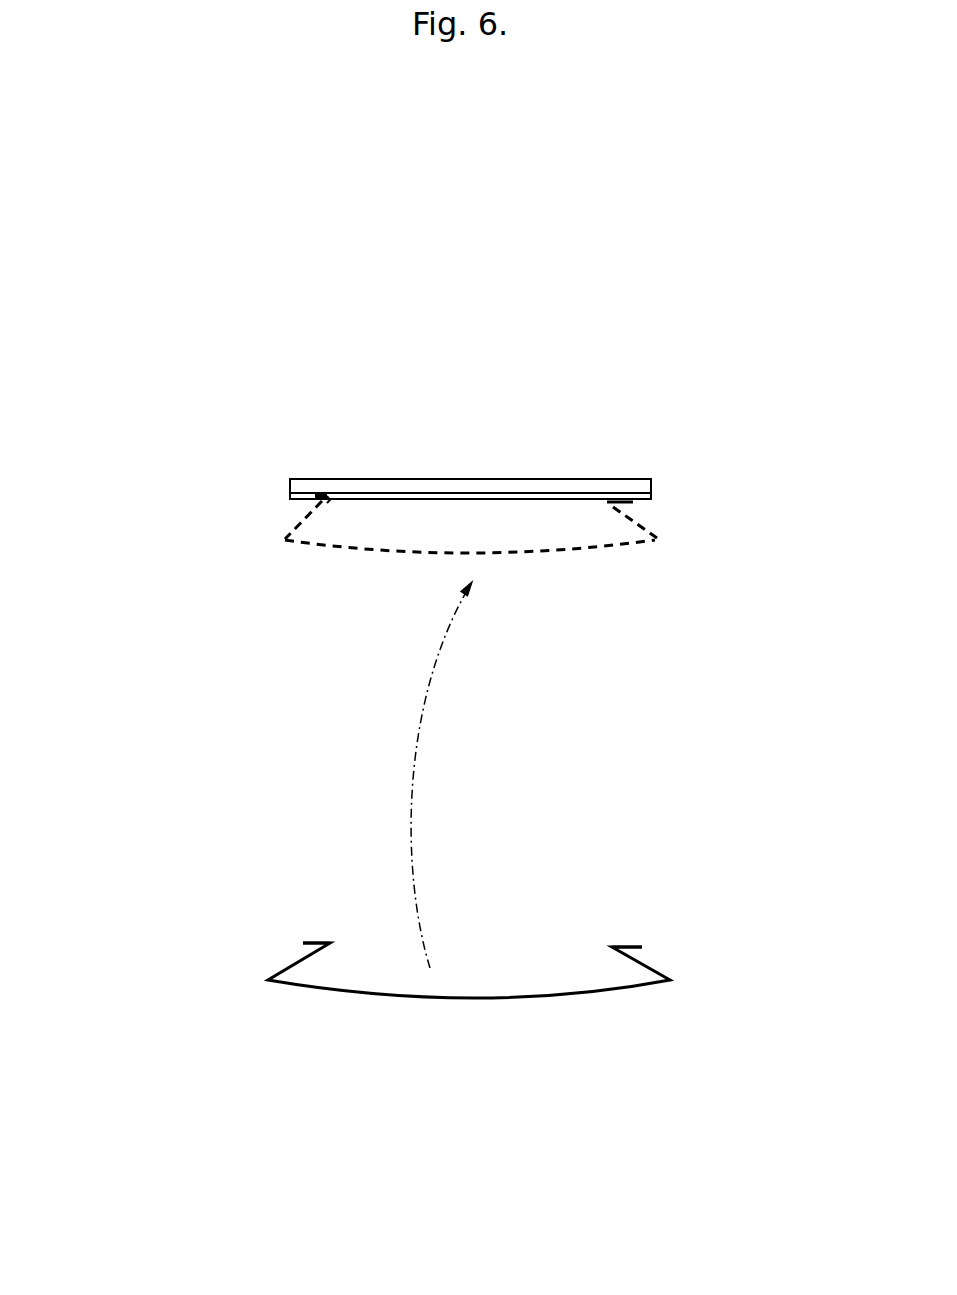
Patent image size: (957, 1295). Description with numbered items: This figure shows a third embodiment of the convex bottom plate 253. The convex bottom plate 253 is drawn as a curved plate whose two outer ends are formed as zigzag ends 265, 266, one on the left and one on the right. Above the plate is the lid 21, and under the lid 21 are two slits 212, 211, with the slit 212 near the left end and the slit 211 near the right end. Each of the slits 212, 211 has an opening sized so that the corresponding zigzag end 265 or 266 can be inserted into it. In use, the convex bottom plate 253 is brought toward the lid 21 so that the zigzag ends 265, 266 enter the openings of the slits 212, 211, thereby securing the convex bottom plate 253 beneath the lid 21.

The lid 21 is at (422, 473).
The slit 211 is at (633, 503).
The slit 212 is at (304, 500).
The convex bottom plate 253 is at (466, 1019).
The zigzag end 265 is at (312, 940).
The zigzag end 266 is at (629, 938).